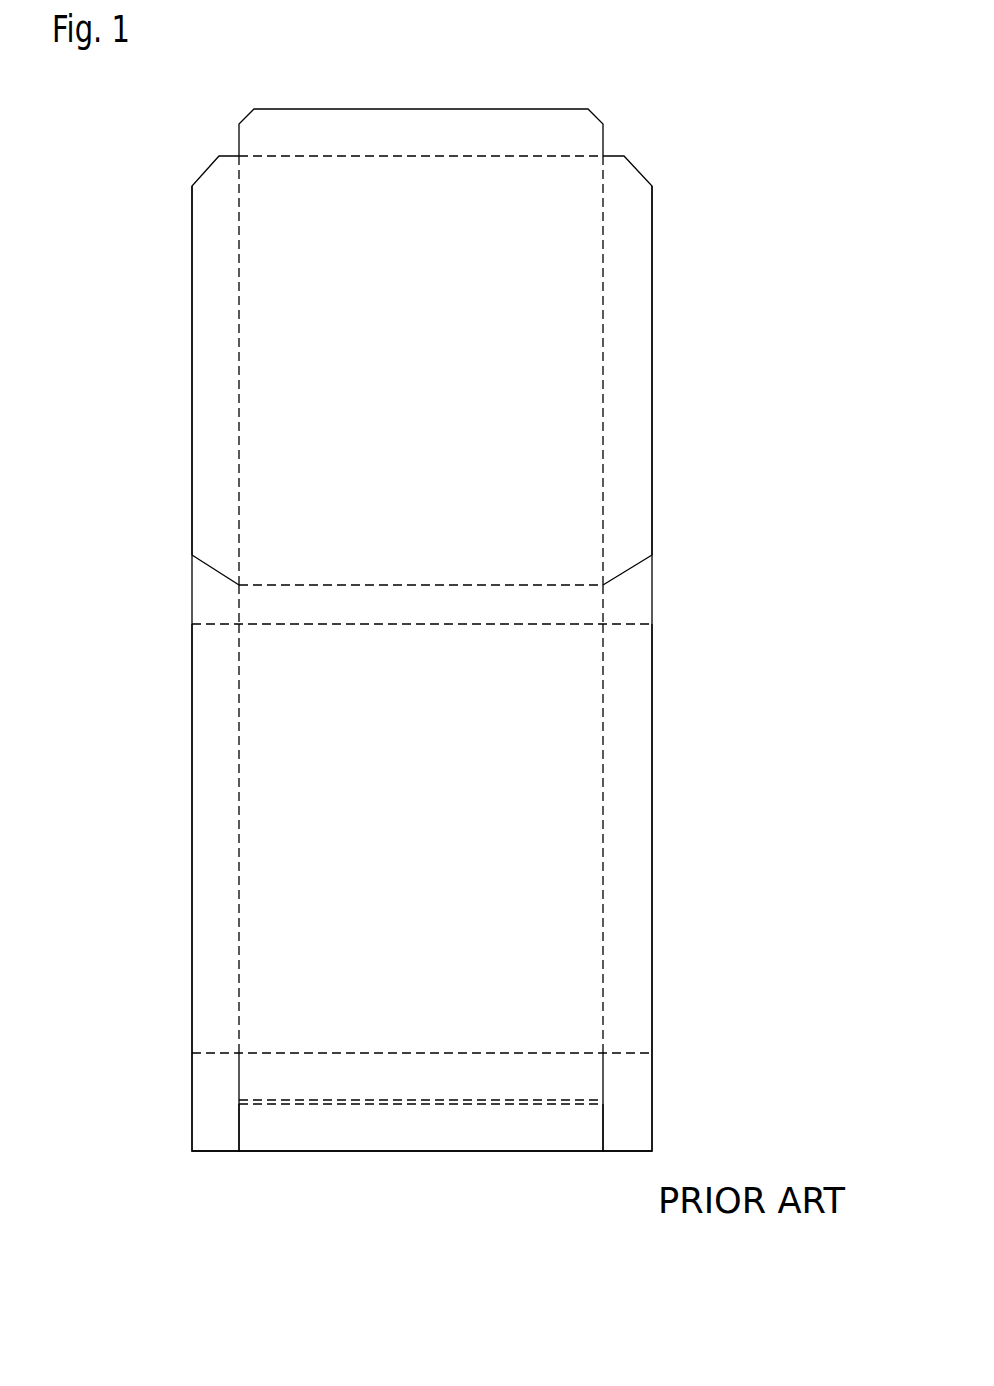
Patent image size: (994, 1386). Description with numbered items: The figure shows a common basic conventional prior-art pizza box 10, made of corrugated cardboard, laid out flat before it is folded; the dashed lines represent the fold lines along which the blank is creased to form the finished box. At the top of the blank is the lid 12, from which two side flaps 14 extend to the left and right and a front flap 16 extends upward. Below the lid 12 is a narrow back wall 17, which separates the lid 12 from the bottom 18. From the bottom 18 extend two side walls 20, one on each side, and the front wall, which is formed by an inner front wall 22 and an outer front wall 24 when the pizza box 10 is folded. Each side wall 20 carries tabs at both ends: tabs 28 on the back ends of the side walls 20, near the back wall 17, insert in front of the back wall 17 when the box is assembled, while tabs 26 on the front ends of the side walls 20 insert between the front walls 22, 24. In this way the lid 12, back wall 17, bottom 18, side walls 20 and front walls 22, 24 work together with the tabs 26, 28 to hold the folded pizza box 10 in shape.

The pizza box 10 is at (756, 151).
The lid 12 is at (426, 373).
The side flaps 14 is at (210, 364).
The front flap 16 is at (400, 130).
The back wall 17 is at (434, 616).
The bottom 18 is at (436, 879).
The side walls 20 is at (217, 833).
The inner front wall 22 is at (423, 1129).
The outer front wall 24 is at (382, 1075).
The tabs 26 is at (218, 1101).
The tabs 28 is at (208, 598).